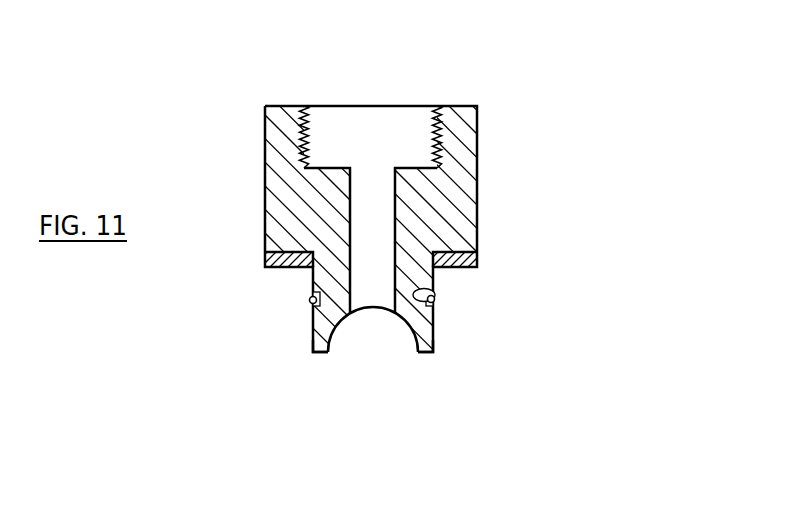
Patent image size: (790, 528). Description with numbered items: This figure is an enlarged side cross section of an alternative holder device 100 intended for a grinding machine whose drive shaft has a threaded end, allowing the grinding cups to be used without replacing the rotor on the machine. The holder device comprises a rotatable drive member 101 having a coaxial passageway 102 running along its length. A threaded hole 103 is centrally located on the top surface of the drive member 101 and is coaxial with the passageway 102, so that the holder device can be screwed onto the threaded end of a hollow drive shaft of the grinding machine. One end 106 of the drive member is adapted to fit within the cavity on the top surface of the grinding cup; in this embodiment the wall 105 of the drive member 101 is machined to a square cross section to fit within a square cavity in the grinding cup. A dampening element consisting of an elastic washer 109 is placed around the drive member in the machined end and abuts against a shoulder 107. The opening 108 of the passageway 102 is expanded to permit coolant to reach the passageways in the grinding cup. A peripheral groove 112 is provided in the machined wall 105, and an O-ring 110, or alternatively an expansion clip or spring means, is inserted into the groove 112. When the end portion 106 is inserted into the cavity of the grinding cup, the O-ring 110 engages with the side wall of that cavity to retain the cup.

The holder device 100 is at (494, 77).
The rotatable drive member 101 is at (477, 132).
The coaxial passageway 102 is at (378, 195).
The threaded hole 103 is at (350, 117).
The wall 105 is at (435, 337).
The end 106 is at (514, 280).
The shoulder 107 is at (452, 250).
The opening 108 is at (373, 330).
The elastic washer 109 is at (477, 258).
The O-ring 110 is at (310, 300).
The peripheral groove 112 is at (436, 291).